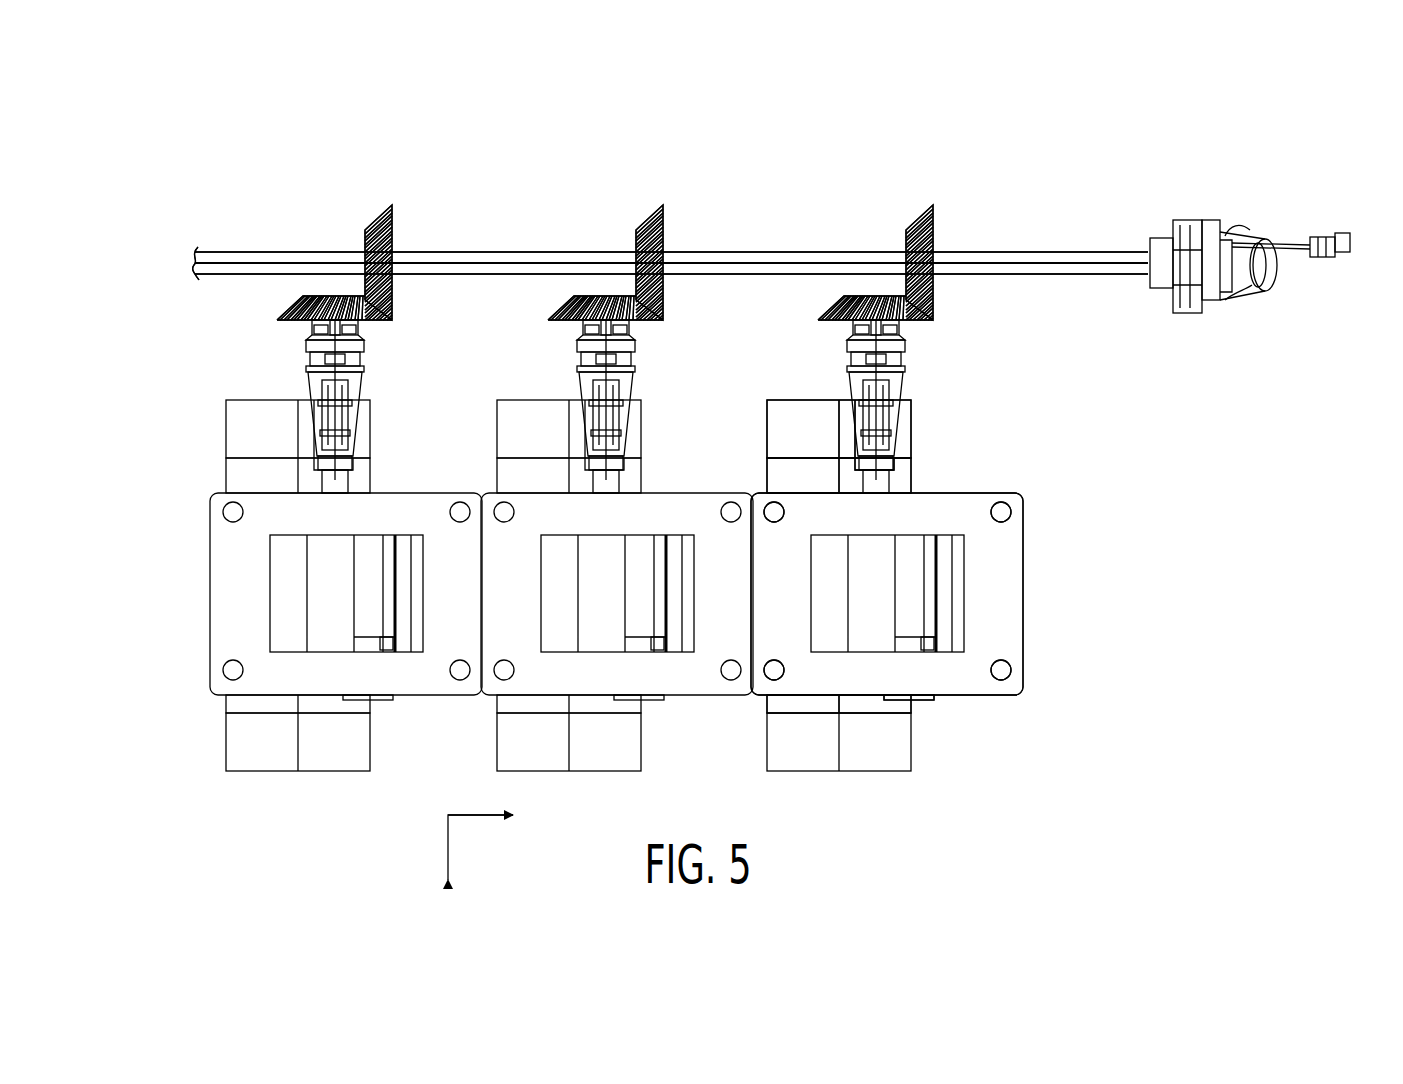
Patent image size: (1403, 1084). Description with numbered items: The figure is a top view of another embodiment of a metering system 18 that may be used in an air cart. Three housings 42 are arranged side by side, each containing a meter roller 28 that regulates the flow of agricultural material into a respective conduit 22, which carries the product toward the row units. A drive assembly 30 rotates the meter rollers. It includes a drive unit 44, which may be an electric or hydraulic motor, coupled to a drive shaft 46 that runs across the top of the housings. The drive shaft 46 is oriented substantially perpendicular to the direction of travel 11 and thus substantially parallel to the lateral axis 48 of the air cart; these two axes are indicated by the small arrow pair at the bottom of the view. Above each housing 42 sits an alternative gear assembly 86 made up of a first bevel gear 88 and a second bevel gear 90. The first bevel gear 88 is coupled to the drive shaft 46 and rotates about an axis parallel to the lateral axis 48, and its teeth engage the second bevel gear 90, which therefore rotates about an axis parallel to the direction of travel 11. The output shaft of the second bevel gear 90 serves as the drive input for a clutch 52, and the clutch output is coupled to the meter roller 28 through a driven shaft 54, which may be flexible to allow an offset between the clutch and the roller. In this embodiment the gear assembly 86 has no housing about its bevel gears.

The direction of travel 11 is at (446, 846).
The metering system 18 is at (1069, 425).
The conduit 22 is at (278, 760).
The meter roller 28 is at (397, 585).
The drive assembly 30 is at (1072, 154).
The housing 42 is at (240, 590).
The drive unit 44 is at (1240, 218).
The drive shaft 46 is at (1077, 252).
The lateral axis 48 is at (476, 817).
The clutch 52 is at (350, 410).
The driven shaft 54 is at (348, 483).
The gear assembly 86 is at (326, 186).
The first bevel gear 88 is at (395, 237).
The second bevel gear 90 is at (372, 322).